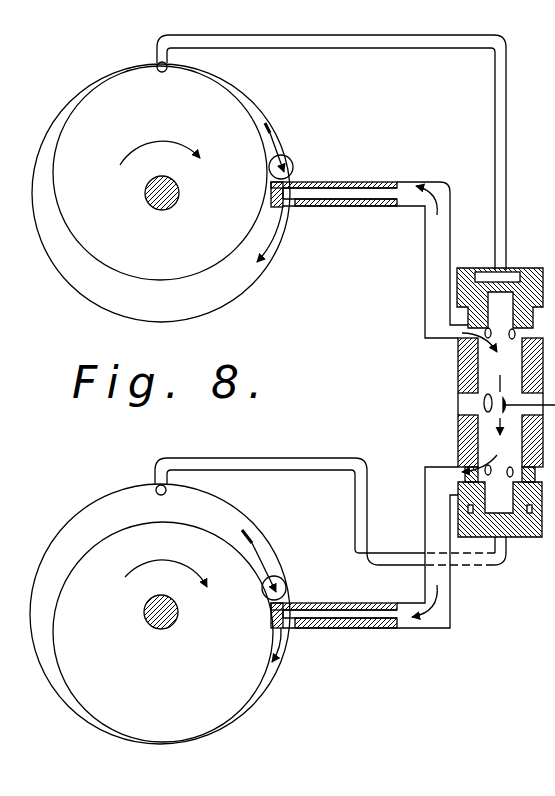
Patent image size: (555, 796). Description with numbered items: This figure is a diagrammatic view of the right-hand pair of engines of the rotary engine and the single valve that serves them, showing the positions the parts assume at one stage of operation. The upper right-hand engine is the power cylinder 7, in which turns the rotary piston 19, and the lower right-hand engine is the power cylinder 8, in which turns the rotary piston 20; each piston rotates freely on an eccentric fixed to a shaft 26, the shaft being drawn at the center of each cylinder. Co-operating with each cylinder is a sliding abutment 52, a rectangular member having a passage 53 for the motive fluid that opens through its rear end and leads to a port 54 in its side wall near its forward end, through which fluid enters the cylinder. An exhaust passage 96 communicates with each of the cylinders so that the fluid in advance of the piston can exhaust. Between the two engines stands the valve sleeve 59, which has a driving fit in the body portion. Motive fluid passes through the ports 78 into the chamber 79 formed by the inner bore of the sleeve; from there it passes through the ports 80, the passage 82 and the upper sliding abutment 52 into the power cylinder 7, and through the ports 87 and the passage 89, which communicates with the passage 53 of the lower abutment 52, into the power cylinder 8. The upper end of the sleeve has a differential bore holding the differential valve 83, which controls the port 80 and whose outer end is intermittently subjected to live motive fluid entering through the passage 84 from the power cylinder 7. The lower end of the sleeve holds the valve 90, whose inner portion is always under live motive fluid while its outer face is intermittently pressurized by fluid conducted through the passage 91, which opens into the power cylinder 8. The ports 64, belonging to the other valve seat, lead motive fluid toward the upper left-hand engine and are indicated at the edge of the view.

The power cylinder 7 is at (262, 112).
The power cylinder 8 is at (97, 502).
The rotary piston 19 is at (168, 173).
The rotary piston 20 is at (167, 632).
The shaft 26 is at (145, 193).
The exhaust passage 96 is at (269, 168).
The sliding abutment 52 is at (345, 172).
The passage 53 is at (364, 207).
The port 54 is at (314, 206).
The passage 84 is at (408, 48).
The passage 82 is at (437, 266).
The differential valve 83 is at (457, 284).
The port 80 is at (465, 330).
The valve sleeve 59 is at (458, 357).
The chamber 79 is at (488, 366).
The port 78 is at (457, 410).
The port 87 is at (467, 472).
The passage 89 is at (433, 520).
The valve 90 is at (513, 540).
The passage 91 is at (276, 455).
The port 64 is at (14, 328).